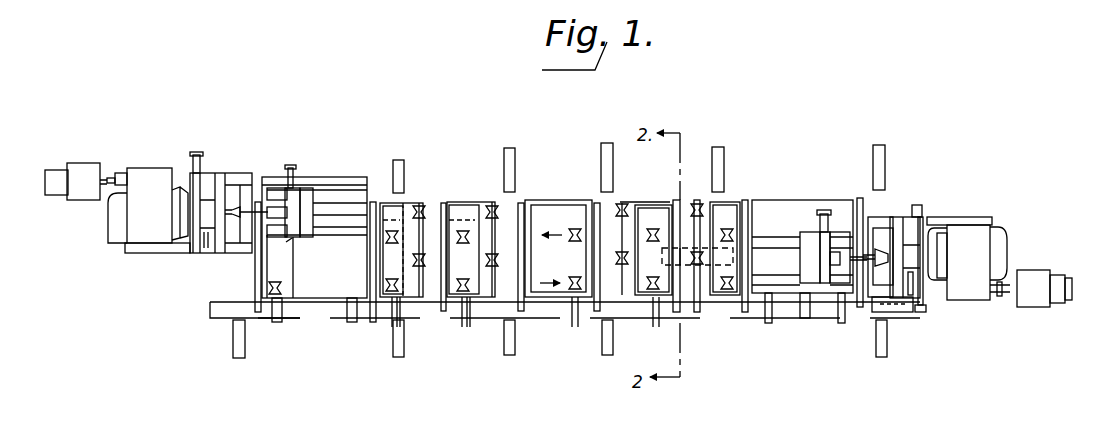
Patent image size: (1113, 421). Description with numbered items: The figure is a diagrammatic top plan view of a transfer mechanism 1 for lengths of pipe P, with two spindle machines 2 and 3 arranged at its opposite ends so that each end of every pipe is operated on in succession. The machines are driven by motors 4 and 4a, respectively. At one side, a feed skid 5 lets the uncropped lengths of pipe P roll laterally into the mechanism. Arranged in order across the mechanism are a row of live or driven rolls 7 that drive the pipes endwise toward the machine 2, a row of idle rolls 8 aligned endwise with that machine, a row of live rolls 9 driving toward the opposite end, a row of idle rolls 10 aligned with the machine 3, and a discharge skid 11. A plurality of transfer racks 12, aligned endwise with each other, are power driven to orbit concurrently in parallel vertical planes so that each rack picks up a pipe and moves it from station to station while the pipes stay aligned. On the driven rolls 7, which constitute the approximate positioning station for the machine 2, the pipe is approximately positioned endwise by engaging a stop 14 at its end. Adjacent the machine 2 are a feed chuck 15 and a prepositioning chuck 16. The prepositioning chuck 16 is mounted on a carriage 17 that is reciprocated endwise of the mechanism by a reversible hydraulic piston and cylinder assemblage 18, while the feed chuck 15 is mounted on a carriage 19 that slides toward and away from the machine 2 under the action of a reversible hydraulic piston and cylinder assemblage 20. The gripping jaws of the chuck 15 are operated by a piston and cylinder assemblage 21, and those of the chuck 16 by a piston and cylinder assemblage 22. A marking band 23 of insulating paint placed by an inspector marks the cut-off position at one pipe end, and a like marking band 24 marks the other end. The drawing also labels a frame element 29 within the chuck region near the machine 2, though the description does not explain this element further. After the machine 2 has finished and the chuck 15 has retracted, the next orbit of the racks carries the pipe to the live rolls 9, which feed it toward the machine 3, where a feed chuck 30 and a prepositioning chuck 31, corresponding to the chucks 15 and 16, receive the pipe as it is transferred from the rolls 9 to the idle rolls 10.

The transfer mechanism 1 is at (470, 198).
The machine 2 is at (962, 230).
The machine 3 is at (143, 175).
The motor 4 is at (1028, 303).
The motor 4a is at (90, 203).
The feed skid 5 is at (232, 348).
The driven rolls 7 is at (572, 277).
The idle rolls 8 is at (698, 258).
The driven rolls 9 is at (572, 229).
The idle rolls 10 is at (496, 208).
The discharge skid 11 is at (515, 158).
The transfer racks 12 is at (368, 318).
The stop 14 is at (910, 283).
The feed chuck 15 is at (893, 230).
The prepositioning chuck 16 is at (823, 238).
The carriage 17 is at (835, 237).
The reversible hydraulic piston and cylinder assemblage 18 is at (682, 262).
The carriage 19 is at (878, 220).
The reversible hydraulic piston and cylinder assemblage 20 is at (830, 280).
The piston and cylinder assemblage 21 is at (925, 308).
The piston and cylinder assemblage 22 is at (825, 210).
The marking band 23 is at (808, 308).
The marking band 24 is at (318, 318).
The frame 29 is at (765, 238).
The feed chuck 30 is at (200, 215).
The prepositioning chuck 31 is at (330, 185).
The pipe P is at (433, 320).